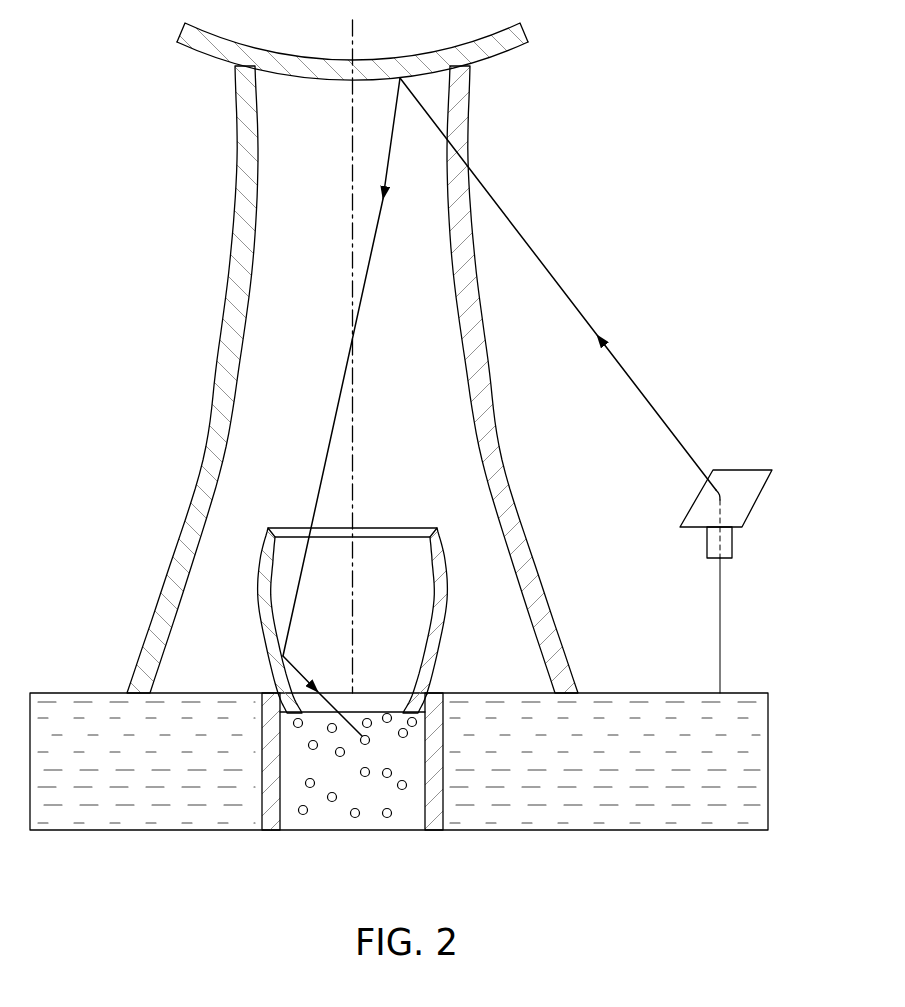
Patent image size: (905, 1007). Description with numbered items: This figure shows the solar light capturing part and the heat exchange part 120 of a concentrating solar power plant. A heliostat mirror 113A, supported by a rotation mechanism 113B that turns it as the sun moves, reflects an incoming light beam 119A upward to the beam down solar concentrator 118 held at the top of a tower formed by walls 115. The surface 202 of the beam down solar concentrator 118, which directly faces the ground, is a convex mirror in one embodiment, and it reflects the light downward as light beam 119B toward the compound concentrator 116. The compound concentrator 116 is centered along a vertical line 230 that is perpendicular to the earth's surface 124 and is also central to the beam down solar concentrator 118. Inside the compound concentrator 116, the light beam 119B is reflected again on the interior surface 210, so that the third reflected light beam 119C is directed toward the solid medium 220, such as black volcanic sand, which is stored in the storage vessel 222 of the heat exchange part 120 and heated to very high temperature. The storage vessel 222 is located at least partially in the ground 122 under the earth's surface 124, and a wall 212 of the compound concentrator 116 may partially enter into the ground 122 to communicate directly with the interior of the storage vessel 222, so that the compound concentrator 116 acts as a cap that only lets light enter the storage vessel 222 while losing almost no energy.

The beam down solar concentrator 118 is at (522, 30).
The surface of the beam down solar concentrator 202 is at (323, 81).
The tower wall 115 is at (237, 213).
The incoming light beam 119A is at (566, 296).
The light beam 119B is at (365, 248).
The third reflected light beam 119C is at (277, 679).
The vertical line 230 is at (350, 391).
The mirror 113A is at (742, 462).
The rotation mechanism 113B is at (742, 543).
The compound concentrator 116 is at (450, 614).
The interior surface of the compound concentrator 210 is at (421, 586).
The wall of the compound concentrator 212 is at (438, 655).
The earth's surface 124 is at (670, 692).
The storage vessel 222 is at (445, 745).
The ground 122 is at (173, 798).
The solid medium 220 is at (332, 802).
The heat exchange part 120 is at (448, 797).